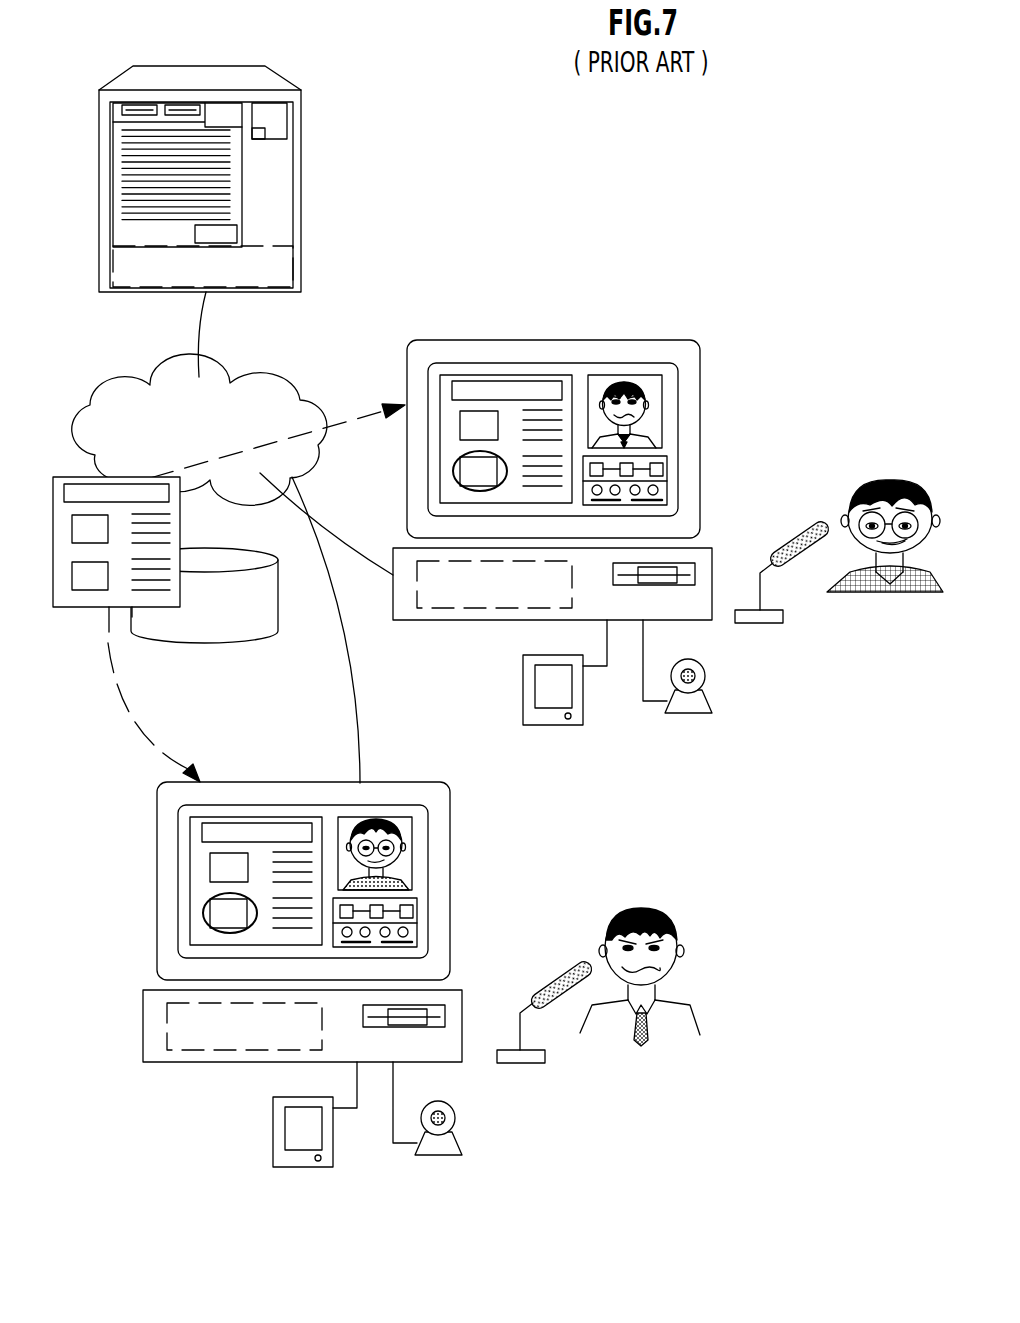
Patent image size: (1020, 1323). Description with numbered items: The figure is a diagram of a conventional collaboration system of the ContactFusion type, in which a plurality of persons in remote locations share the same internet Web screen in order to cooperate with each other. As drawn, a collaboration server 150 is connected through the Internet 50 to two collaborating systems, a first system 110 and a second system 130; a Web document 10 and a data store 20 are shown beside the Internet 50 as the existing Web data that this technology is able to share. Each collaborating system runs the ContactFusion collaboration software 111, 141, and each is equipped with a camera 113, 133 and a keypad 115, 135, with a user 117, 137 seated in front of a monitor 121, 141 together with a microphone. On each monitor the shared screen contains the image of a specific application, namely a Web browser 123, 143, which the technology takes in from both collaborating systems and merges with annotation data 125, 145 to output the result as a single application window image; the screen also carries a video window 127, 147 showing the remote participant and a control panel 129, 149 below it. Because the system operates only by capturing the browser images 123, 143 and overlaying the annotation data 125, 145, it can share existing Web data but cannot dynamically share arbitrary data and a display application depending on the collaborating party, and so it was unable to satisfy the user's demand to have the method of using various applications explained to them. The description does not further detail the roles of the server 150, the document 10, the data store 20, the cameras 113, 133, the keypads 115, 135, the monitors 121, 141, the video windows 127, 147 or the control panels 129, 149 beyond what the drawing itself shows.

The document 10 is at (72, 477).
The database 20 is at (193, 625).
The Internet 50 is at (197, 457).
The collaboration server 150 is at (300, 190).
The first user computer 110 is at (315, 981).
The ContactFusion software 111 is at (197, 1050).
The camera 113 is at (452, 1105).
The keypad 115 is at (273, 1127).
The first user 117 is at (600, 902).
The monitor 121 is at (315, 881).
The specific application (Web browser) 123 is at (190, 924).
The annotation data 125 is at (203, 898).
The video window 127 is at (412, 835).
The control panel 129 is at (417, 933).
The second user computer 130 is at (567, 539).
The camera 133 is at (719, 678).
The keypad 135 is at (527, 693).
The second user 137 is at (864, 467).
The monitor 141 is at (567, 507).
The specific application (Web browser) 143 is at (463, 443).
The annotation data 145 is at (424, 462).
The video window 147 is at (690, 405).
The control panel 149 is at (675, 481).